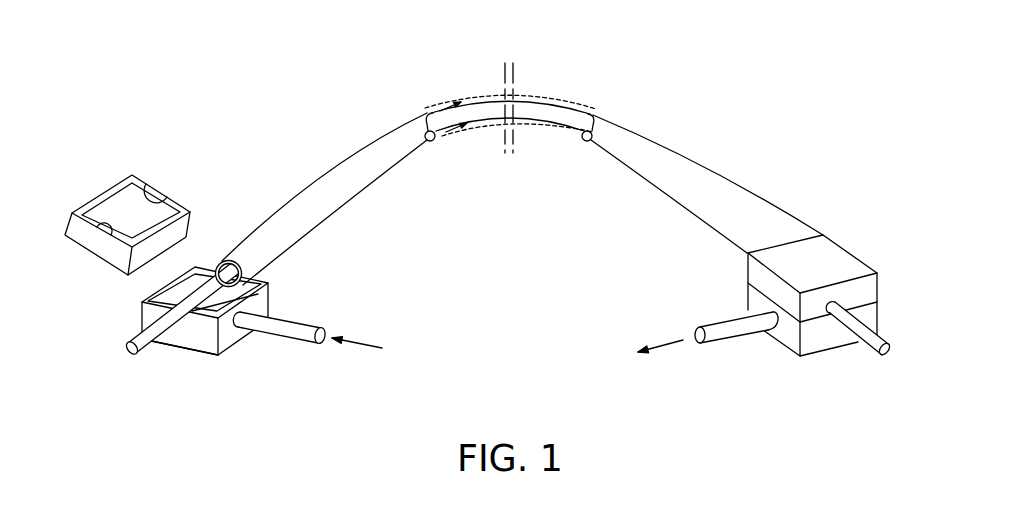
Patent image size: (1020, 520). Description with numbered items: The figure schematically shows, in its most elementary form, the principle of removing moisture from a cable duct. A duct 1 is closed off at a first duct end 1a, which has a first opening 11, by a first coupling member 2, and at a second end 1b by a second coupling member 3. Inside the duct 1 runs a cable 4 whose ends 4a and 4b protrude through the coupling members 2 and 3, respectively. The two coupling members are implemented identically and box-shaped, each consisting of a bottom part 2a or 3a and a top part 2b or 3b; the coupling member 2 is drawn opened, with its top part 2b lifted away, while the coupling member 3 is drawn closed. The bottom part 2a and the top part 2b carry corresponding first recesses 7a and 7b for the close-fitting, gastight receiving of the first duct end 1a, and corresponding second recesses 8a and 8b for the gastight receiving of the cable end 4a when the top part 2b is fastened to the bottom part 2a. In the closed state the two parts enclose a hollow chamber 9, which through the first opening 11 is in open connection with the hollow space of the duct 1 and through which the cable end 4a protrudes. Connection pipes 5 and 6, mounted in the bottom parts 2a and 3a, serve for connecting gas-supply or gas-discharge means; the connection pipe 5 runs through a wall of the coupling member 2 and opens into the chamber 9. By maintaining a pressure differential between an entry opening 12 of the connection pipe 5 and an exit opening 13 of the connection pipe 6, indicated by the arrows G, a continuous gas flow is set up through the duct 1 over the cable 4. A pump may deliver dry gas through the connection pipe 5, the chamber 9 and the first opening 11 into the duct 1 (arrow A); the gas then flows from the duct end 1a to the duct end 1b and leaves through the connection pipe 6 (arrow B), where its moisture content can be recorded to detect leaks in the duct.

The duct 1 is at (522, 157).
The first duct end 1a is at (270, 236).
The second duct end 1b is at (723, 247).
The first coupling member 2 is at (222, 258).
The bottom part 2a is at (256, 349).
The top part 2b is at (146, 206).
The second coupling member 3 is at (783, 307).
The bottom part 3a is at (815, 345).
The top part 3b is at (877, 293).
The cable 4 is at (532, 108).
The cable end 4a is at (140, 349).
The cable end 4b is at (873, 355).
The connection pipe 5 is at (295, 379).
The connection pipe 6 is at (714, 374).
The first recess 7a is at (272, 276).
The first recess 7b is at (152, 192).
The second recess 8a is at (177, 327).
The second recess 8b is at (102, 228).
The chamber 9 is at (117, 208).
The first opening 11 is at (222, 260).
The entry opening 12 is at (322, 343).
The exit opening 13 is at (698, 343).
The arrow A is at (366, 352).
The arrow B is at (647, 357).
The arrows G is at (448, 106).